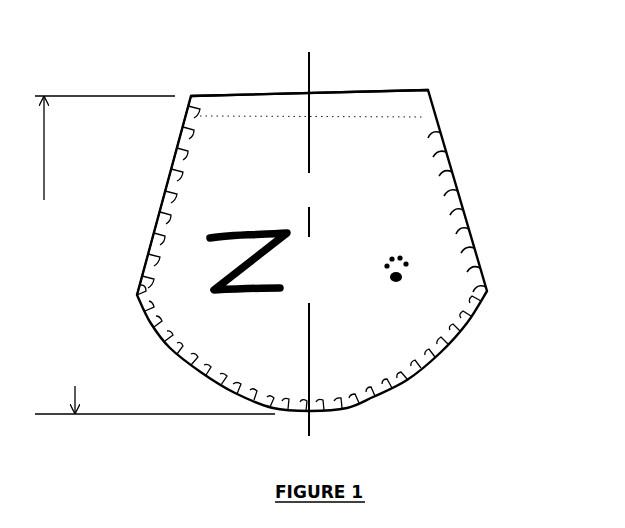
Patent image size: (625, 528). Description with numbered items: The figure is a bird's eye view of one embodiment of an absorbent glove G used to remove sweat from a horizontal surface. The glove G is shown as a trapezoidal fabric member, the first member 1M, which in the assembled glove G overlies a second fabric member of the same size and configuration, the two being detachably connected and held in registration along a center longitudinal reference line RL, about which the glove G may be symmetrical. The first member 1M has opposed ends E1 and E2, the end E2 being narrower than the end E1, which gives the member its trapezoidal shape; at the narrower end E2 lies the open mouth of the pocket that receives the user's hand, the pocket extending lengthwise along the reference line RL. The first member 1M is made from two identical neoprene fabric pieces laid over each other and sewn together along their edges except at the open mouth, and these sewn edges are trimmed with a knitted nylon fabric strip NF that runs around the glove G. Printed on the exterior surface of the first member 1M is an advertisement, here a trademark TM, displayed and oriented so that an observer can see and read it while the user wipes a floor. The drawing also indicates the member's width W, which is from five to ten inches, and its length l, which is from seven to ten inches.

The end E2 is at (400, 107).
The end E1 is at (272, 415).
The trademark TM is at (215, 268).
The width W is at (136, 295).
The glove G is at (152, 343).
The first member 1M is at (210, 367).
The reference line RL is at (310, 415).
The knitted nylon fabric strip NF is at (440, 355).
The length l is at (155, 255).